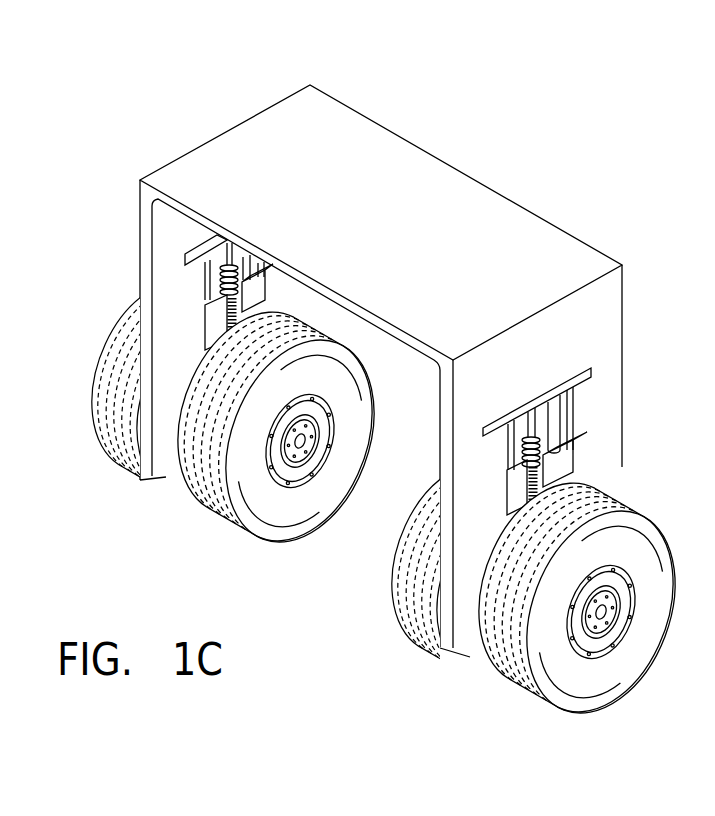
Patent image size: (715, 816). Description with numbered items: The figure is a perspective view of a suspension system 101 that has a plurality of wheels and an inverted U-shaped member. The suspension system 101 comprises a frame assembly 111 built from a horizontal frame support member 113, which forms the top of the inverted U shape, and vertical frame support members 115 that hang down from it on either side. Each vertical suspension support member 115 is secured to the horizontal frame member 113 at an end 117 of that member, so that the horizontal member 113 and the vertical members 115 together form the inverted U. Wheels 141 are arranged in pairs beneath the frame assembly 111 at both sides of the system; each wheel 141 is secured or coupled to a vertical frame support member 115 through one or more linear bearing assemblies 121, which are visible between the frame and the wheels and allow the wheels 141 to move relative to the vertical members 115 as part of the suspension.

The suspension system 101 is at (390, 386).
The frame assembly 111 is at (398, 443).
The horizontal frame support member 113 is at (253, 155).
The vertical frame support member 115 is at (145, 235).
The end 117 is at (390, 343).
The linear bearing assembly 121 is at (569, 415).
The wheel 141 is at (640, 627).